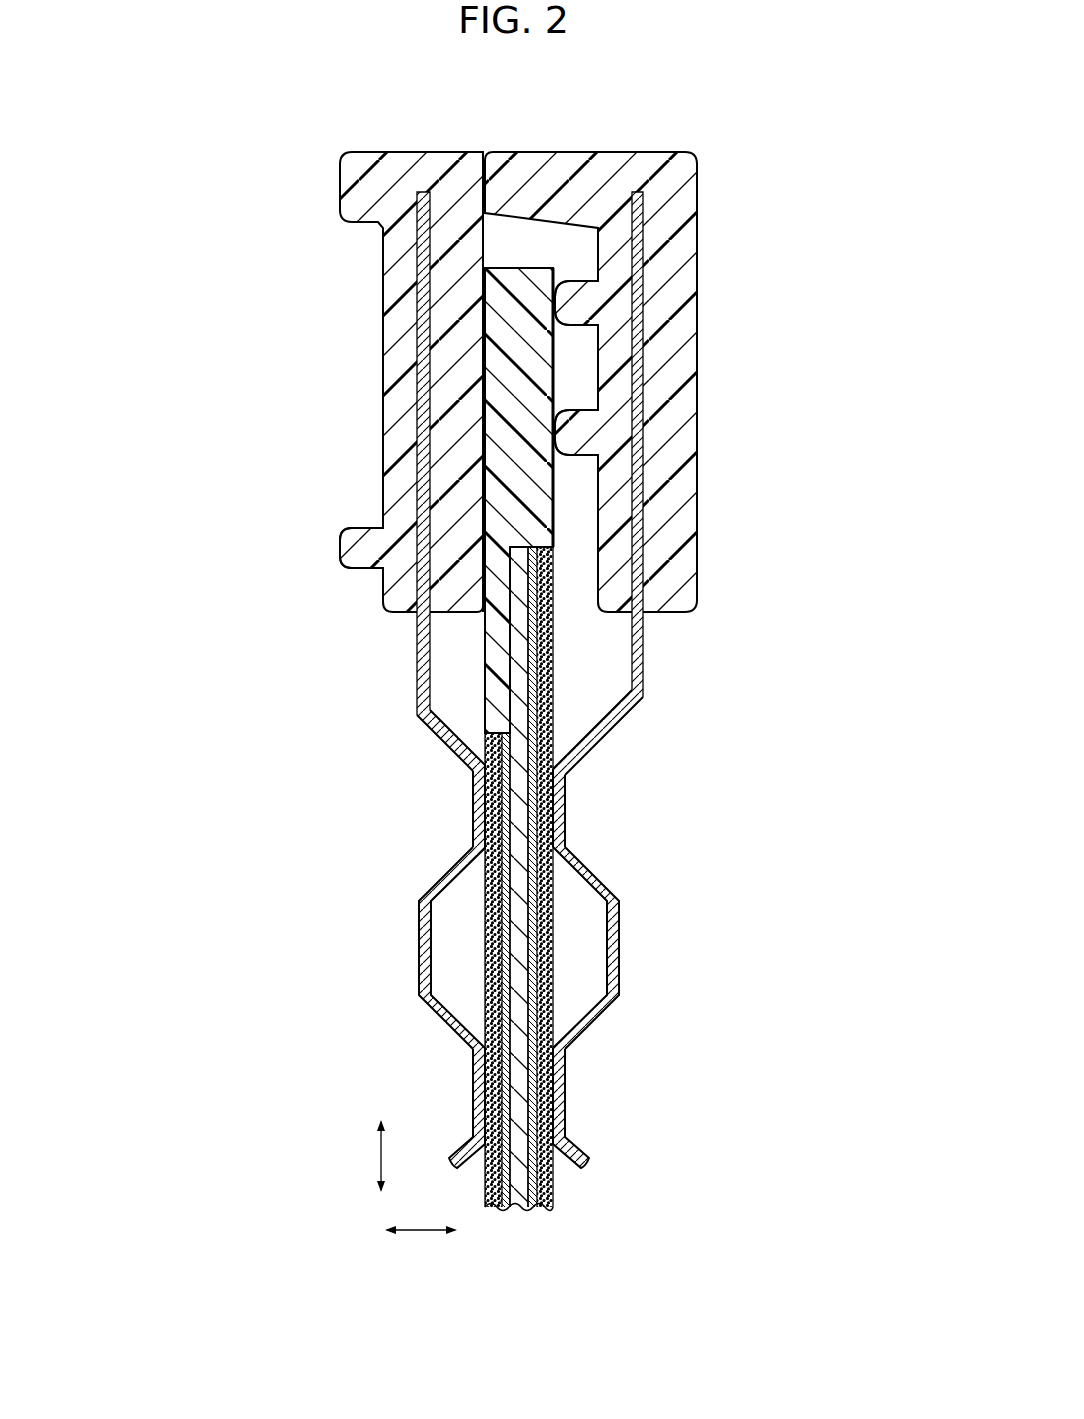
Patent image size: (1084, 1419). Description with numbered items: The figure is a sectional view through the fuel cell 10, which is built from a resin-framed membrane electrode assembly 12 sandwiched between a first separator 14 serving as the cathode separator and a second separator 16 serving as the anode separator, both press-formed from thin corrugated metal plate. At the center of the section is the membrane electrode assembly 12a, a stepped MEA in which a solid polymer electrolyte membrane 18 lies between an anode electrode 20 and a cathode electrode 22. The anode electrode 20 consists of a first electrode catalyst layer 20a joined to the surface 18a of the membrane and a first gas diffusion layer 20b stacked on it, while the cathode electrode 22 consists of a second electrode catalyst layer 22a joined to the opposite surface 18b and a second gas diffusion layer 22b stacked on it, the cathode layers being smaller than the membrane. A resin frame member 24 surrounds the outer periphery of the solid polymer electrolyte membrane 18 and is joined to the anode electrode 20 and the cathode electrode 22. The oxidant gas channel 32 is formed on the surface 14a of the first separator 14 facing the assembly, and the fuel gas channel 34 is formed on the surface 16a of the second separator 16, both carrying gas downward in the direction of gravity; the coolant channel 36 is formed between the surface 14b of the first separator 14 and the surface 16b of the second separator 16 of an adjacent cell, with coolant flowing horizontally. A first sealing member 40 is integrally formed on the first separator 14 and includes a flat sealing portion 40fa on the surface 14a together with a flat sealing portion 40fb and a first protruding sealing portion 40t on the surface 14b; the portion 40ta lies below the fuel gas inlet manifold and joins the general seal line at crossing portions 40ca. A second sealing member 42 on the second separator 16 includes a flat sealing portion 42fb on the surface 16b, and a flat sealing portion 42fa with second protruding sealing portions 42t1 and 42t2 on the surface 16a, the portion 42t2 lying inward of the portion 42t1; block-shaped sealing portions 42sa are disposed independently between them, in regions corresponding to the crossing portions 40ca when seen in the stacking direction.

The fuel cell 10 is at (644, 69).
The resin-framed membrane electrode assembly 12 is at (581, 1236).
The membrane electrode assembly 12a is at (683, 1080).
The first separator 14 is at (401, 131).
The surface of the first separator 14a is at (455, 735).
The surface of the first separator 14b is at (417, 663).
The second separator 16 is at (711, 145).
The surface of the second separator 16a is at (632, 658).
The surface of the second separator 16b is at (643, 640).
The solid polymer electrolyte membrane 18 is at (520, 1145).
The surface of the solid polymer electrolyte membrane 18a is at (533, 1022).
The surface of the solid polymer electrolyte membrane 18b is at (505, 1012).
The anode electrode 20 is at (645, 1062).
The first electrode catalyst layer 20a is at (535, 1100).
The first gas diffusion layer 20b is at (545, 1080).
The cathode electrode 22 is at (645, 1158).
The second electrode catalyst layer 22a is at (492, 1190).
The second gas diffusion layer 22b is at (505, 1176).
The resin frame member 24 is at (548, 385).
The oxidant gas channel 32 is at (453, 910).
The fuel gas channel 34 is at (580, 910).
The coolant channel 36 is at (438, 832).
The first sealing member 40 is at (445, 148).
The first protruding sealing portion 40t is at (358, 187).
The first protruding sealing portion 40ta is at (298, 544).
The crossing portions 40ca is at (355, 538).
The flat sealing portion 40fa is at (486, 250).
The flat sealing portion 40fb is at (383, 340).
The second sealing member 42 is at (590, 146).
The second protruding sealing portion 42t1 is at (518, 152).
The second protruding sealing portion 42t2 is at (570, 428).
The flat sealing portion 42fa is at (610, 245).
The flat sealing portion 42fb is at (692, 287).
The block-shaped sealing portions 42sa is at (572, 300).